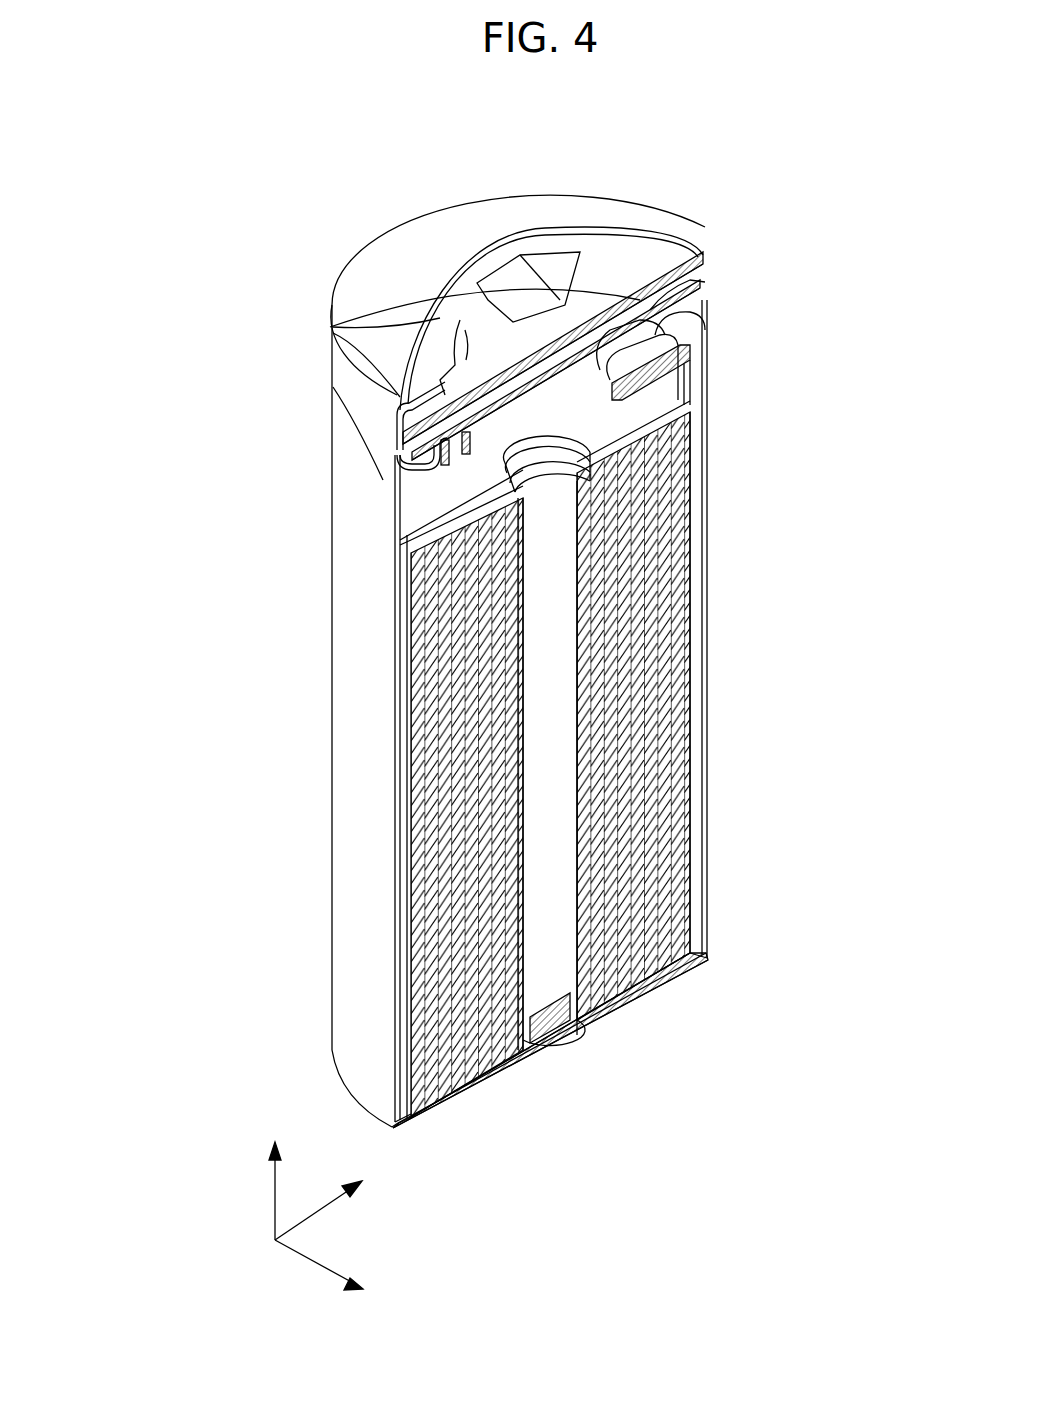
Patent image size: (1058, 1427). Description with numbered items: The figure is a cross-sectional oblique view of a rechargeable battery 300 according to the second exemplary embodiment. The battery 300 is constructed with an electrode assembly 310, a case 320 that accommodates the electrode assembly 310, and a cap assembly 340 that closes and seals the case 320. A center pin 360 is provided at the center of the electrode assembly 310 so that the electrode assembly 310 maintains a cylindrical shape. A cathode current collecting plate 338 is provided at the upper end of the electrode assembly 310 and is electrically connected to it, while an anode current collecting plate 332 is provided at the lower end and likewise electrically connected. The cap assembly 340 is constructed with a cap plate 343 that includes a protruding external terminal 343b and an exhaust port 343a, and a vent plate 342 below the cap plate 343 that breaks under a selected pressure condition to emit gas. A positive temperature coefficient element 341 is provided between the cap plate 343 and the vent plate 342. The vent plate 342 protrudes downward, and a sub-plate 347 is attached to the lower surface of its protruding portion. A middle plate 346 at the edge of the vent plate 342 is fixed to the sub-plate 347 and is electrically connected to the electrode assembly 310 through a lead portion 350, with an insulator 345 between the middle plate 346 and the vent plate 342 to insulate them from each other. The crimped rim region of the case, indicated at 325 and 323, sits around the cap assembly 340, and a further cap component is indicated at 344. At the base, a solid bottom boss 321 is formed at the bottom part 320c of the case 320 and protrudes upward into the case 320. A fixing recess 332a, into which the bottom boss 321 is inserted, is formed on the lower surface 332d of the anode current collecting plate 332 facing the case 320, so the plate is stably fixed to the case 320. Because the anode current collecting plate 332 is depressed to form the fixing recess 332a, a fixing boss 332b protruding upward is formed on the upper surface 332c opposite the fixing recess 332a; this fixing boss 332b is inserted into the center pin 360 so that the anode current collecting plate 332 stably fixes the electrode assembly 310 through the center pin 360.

The rechargeable battery 300 is at (528, 142).
The electrode assembly 310 is at (617, 985).
The case 320 is at (350, 655).
The bottom part 320c is at (680, 968).
The bottom boss 321 is at (540, 1047).
The bead 323 is at (423, 450).
The crimp 325 is at (405, 440).
The anode current collecting plate 332 is at (415, 1113).
The fixing recess 332a is at (590, 1013).
The fixing boss 332b is at (558, 1032).
The upper surface 332c is at (410, 1112).
The lower surface 332d is at (407, 1125).
The cathode current collecting plate 338 is at (420, 513).
The cap assembly 340 is at (806, 185).
The positive temperature coefficient element 341 is at (700, 262).
The vent plate 342 is at (700, 285).
The cap plate 343 is at (627, 262).
The exhaust port 343a is at (455, 323).
The external terminal 343b is at (510, 283).
The insulator 344 is at (665, 300).
The insulator 345 is at (690, 322).
The middle plate 346 is at (700, 340).
The sub-plate 347 is at (700, 360).
The lead portion 350 is at (690, 380).
The center pin 360 is at (545, 795).